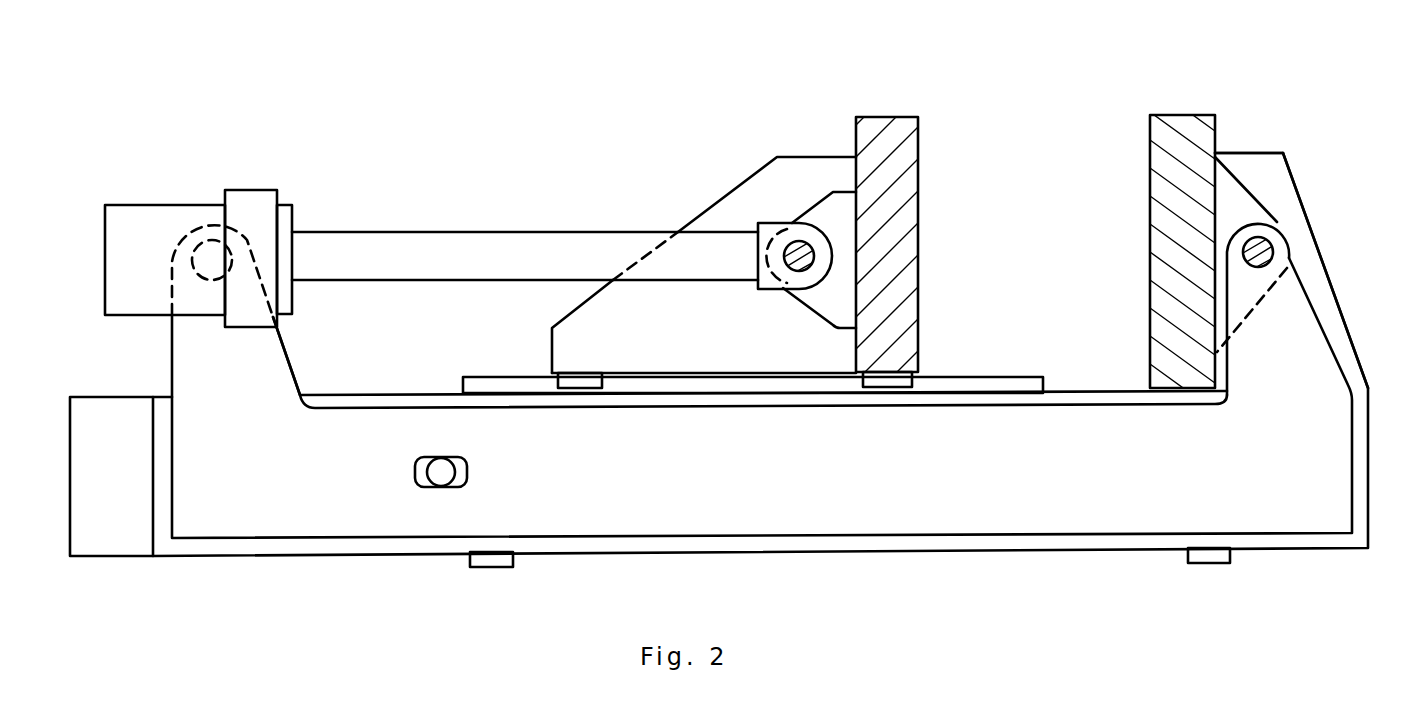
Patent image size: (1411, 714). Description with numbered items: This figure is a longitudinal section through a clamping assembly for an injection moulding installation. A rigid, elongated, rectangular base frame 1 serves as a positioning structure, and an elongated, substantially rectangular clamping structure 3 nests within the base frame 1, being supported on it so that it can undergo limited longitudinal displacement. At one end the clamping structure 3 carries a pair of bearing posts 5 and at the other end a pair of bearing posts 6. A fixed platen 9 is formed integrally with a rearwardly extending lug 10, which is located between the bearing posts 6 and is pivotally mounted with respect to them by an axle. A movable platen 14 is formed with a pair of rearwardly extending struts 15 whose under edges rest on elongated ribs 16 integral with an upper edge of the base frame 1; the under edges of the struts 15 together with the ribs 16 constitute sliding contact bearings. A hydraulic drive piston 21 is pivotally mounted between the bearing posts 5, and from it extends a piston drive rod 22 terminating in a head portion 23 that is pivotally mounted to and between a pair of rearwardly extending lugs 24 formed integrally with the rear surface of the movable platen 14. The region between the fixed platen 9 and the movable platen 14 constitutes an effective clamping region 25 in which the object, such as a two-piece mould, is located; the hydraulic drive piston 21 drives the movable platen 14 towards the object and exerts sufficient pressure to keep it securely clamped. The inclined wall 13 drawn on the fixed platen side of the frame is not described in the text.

The base frame 1 is at (1063, 542).
The clamping structure 3 is at (913, 478).
The bearing posts 5 is at (252, 355).
The bearing posts 6 is at (1280, 335).
The fixed platen 9 is at (1176, 123).
The lug 10 is at (1227, 193).
The end wall top 13 is at (1280, 185).
The movable platen 14 is at (883, 125).
The struts 15 is at (725, 208).
The ribs 16 is at (958, 382).
The hydraulic drive piston 21 is at (143, 222).
The piston drive rod 22 is at (398, 245).
The head portion 23 is at (770, 232).
The lugs 24 is at (843, 235).
The clamping region 25 is at (1057, 278).